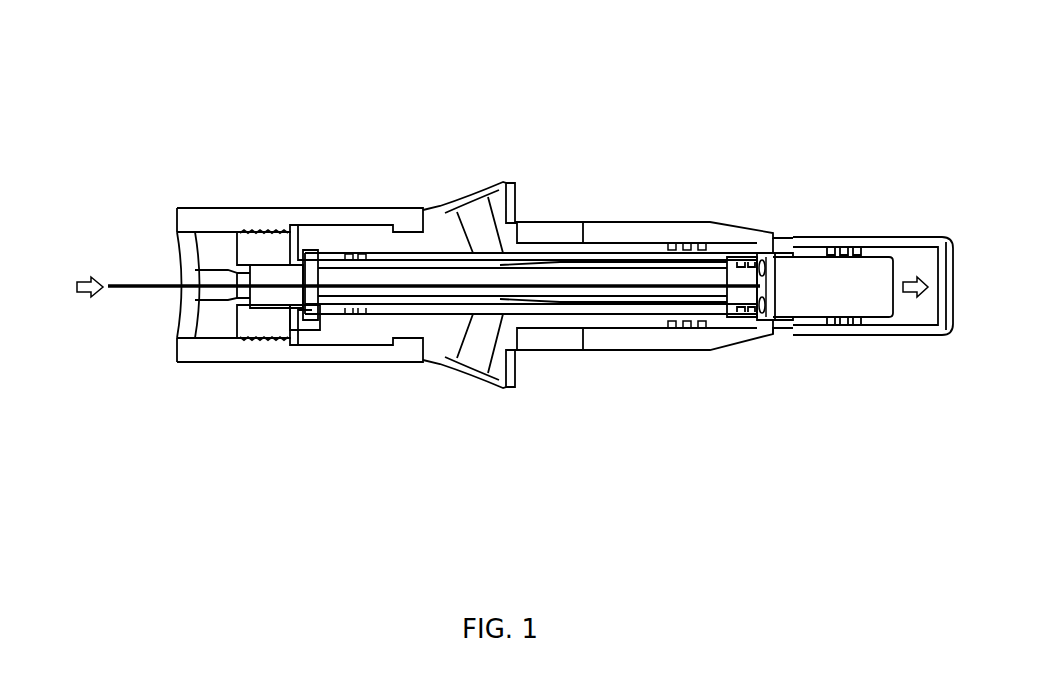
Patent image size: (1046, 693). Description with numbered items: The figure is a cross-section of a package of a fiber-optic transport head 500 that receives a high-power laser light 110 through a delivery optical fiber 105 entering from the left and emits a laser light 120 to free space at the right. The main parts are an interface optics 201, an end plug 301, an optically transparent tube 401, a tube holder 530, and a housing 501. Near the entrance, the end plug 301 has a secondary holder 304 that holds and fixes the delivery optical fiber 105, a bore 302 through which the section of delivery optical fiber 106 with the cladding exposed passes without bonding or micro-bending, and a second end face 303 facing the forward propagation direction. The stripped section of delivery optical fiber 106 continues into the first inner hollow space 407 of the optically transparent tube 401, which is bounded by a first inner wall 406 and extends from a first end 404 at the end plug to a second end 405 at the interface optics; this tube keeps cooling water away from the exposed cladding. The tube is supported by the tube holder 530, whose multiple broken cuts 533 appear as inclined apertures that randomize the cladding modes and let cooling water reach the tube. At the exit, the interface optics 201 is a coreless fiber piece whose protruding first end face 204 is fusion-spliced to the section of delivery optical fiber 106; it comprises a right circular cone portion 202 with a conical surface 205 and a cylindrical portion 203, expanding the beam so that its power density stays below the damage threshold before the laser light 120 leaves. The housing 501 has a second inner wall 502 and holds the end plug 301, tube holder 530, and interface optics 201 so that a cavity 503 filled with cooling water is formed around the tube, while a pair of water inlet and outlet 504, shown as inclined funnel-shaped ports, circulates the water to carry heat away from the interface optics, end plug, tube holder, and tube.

The high-power laser light 110 is at (83, 278).
The delivery optical fiber 105 is at (142, 280).
The secondary holder 304 is at (212, 277).
The end plug 301 is at (260, 273).
The bore 302 is at (272, 280).
The first end 404 is at (307, 272).
The second end face 303 is at (312, 325).
The tube holder 530 is at (370, 315).
The cavity 503 is at (420, 310).
The pair of water inlet and outlet 504 is at (467, 230).
The housing 501 is at (415, 208).
The multiple broken cuts 533 is at (563, 230).
The second inner wall 502 is at (532, 230).
The package of a fiber-optic transport head 500 is at (592, 208).
The optically transparent tube 401 is at (700, 262).
The first inner wall 406 is at (607, 313).
The first inner hollow space 407 is at (672, 295).
The section of delivery optical fiber with the cladding exposed 106 is at (705, 245).
The second end 405 is at (750, 317).
The first end face 204 is at (763, 317).
The right circular cone portion 202 is at (763, 287).
The conical surface 205 is at (770, 277).
The cylindrical portion 203 is at (820, 257).
The interface optics 201 is at (848, 275).
The laser light 120 is at (913, 297).